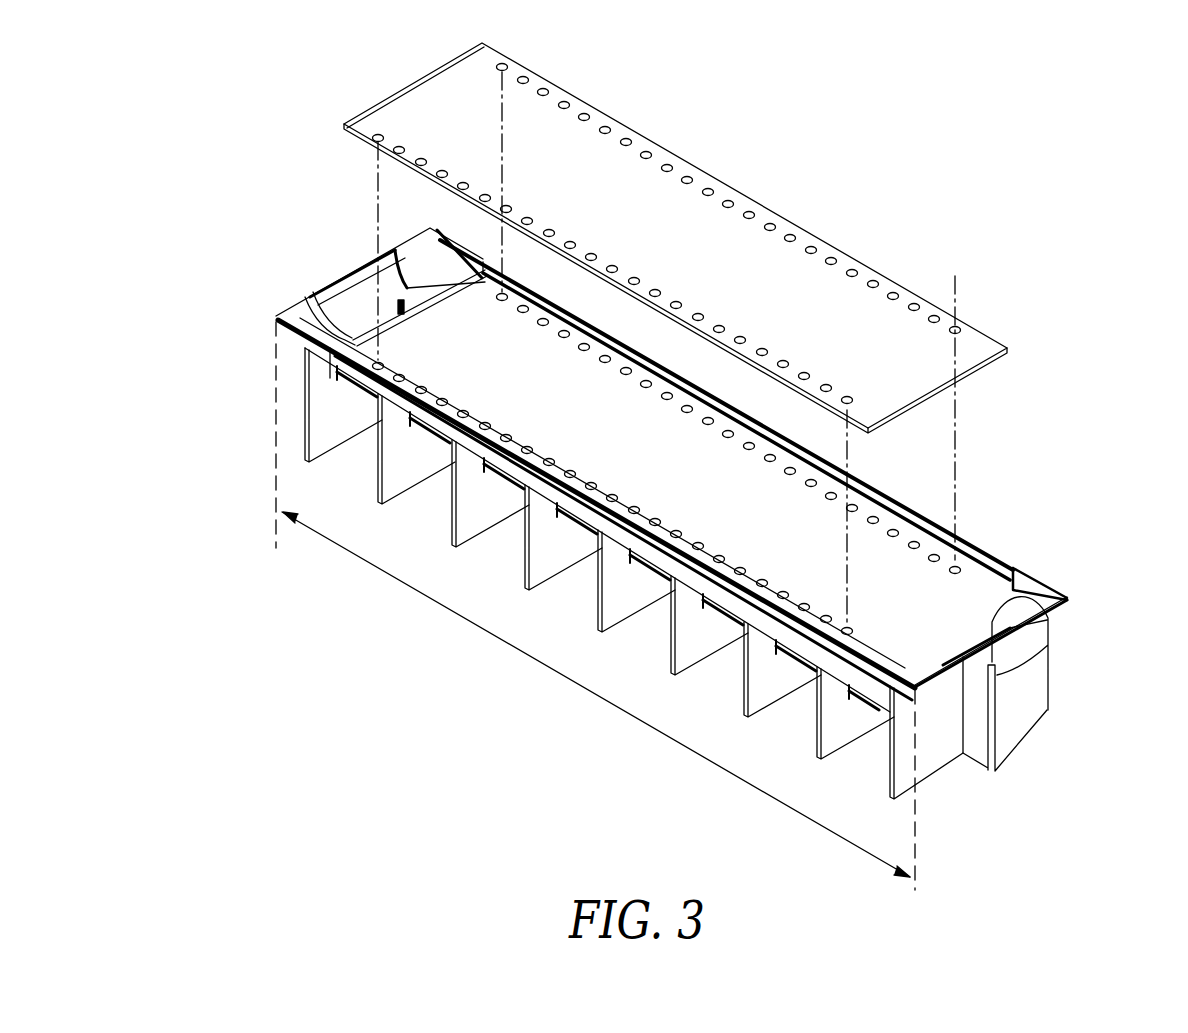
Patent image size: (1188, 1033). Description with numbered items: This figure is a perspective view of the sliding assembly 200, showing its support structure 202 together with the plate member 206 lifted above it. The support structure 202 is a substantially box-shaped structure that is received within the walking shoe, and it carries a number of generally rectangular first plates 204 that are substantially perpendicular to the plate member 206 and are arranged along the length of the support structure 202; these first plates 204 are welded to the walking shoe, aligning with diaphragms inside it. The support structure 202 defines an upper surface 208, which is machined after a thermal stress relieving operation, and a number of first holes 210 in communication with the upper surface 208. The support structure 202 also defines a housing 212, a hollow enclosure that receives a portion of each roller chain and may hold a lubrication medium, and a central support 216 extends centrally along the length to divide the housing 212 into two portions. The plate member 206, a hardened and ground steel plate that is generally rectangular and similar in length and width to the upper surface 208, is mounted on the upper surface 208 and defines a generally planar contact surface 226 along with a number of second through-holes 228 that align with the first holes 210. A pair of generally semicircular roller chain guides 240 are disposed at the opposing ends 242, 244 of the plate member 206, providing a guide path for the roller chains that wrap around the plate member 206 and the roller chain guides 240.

The sliding assembly 200 is at (1012, 513).
The support structure 202 is at (268, 303).
The first plates 204 is at (403, 473).
The plate member 206 is at (850, 232).
The upper surface 208 is at (893, 580).
The first holes 210 is at (553, 460).
The housing 212 is at (1020, 643).
The central support 216 is at (997, 725).
The contact surface 226 is at (762, 267).
The second through-holes 228 is at (613, 262).
The roller chain guides 240 is at (362, 320).
The first end of the plate member 242 is at (343, 342).
The second end of the plate member 244 is at (1005, 595).